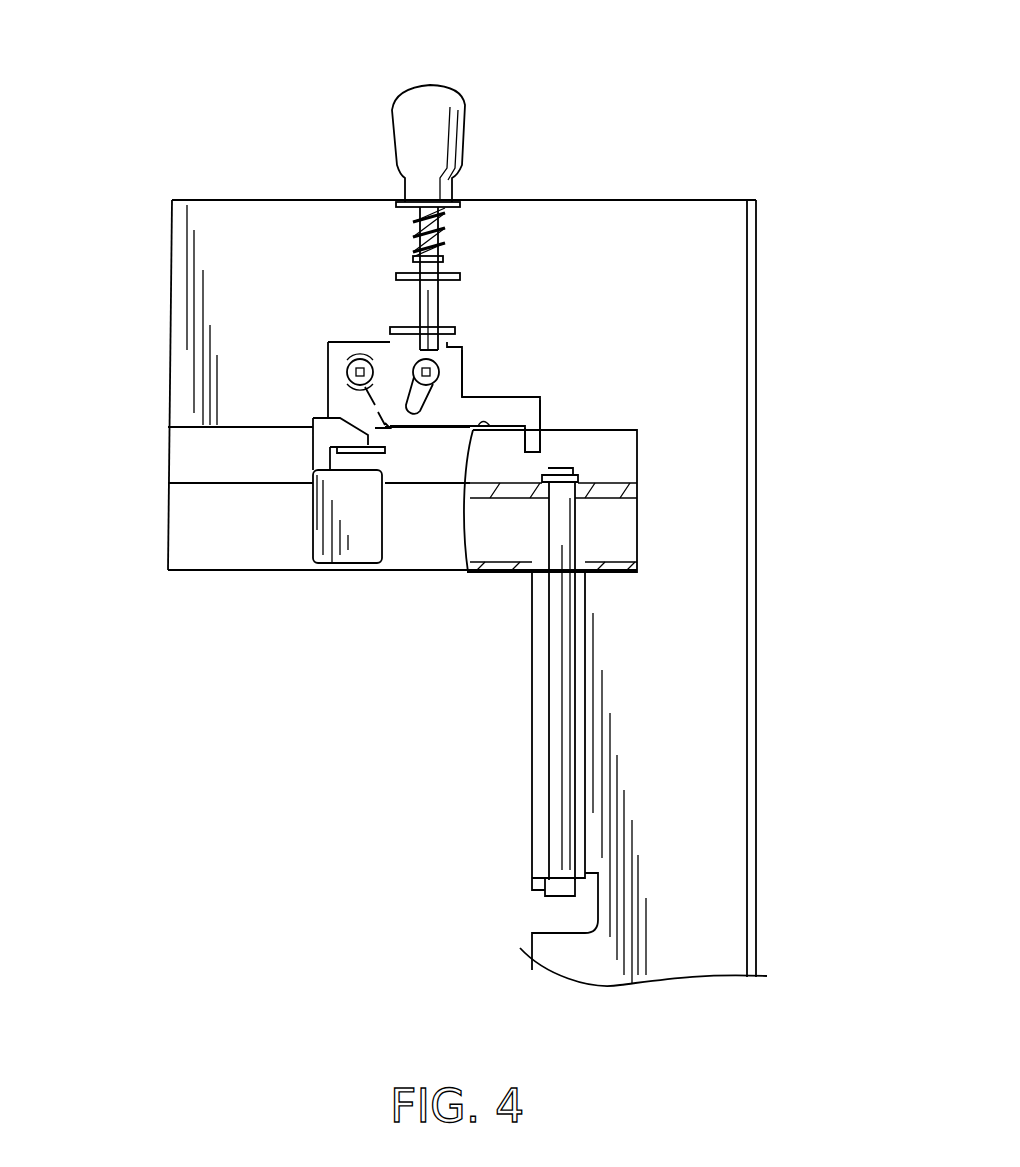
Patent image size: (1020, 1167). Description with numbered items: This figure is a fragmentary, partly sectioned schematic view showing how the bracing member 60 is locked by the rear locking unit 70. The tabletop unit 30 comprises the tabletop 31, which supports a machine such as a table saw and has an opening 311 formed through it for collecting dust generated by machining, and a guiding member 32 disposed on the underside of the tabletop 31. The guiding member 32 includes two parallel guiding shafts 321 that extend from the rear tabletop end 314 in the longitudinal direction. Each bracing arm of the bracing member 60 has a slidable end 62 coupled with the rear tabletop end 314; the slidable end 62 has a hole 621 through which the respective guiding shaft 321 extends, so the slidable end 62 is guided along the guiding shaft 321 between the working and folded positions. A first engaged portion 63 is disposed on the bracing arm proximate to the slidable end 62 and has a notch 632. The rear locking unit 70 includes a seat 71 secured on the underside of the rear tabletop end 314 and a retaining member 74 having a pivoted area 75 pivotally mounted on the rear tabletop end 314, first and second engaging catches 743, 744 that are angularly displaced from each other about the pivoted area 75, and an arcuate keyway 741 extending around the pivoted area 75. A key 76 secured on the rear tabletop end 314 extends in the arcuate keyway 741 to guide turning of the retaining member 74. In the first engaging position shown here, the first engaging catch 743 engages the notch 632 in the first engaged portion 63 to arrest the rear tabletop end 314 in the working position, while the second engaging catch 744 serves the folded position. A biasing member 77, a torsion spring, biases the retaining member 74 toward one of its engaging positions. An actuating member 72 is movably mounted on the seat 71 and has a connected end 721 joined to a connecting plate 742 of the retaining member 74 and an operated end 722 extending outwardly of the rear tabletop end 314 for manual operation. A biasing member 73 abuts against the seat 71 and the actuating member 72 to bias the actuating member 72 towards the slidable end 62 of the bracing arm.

The tabletop unit 30 is at (530, 581).
The tabletop 31 is at (732, 713).
The opening 311 is at (520, 948).
The rear tabletop end 314 is at (208, 210).
The guiding member 32 is at (625, 656).
The guiding shaft 321 is at (560, 767).
The hole 621 is at (540, 574).
The bracing member 60 is at (347, 547).
The slidable end 62 is at (252, 553).
The first engaged portion 63 is at (348, 540).
The notch 632 is at (343, 470).
The first engaging catch 743 is at (312, 450).
The retaining member 74 is at (475, 378).
The arcuate keyway 741 is at (464, 386).
The second engaging catch 744 is at (538, 413).
The pivoted area 75 is at (347, 372).
The key 76 is at (417, 362).
The biasing member 77 is at (367, 398).
The rear locking unit 70 is at (426, 184).
The operated end 722 is at (455, 135).
The seat 71 is at (400, 197).
The biasing member 73 is at (420, 232).
The actuating member 72 is at (438, 305).
The connecting plate 742 is at (455, 332).
The connected end 721 is at (447, 345).